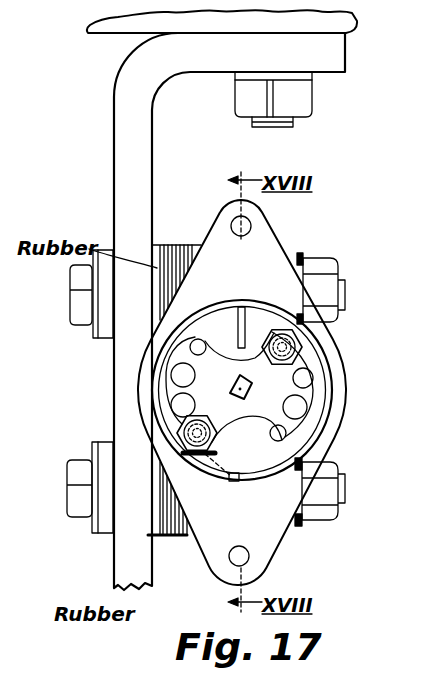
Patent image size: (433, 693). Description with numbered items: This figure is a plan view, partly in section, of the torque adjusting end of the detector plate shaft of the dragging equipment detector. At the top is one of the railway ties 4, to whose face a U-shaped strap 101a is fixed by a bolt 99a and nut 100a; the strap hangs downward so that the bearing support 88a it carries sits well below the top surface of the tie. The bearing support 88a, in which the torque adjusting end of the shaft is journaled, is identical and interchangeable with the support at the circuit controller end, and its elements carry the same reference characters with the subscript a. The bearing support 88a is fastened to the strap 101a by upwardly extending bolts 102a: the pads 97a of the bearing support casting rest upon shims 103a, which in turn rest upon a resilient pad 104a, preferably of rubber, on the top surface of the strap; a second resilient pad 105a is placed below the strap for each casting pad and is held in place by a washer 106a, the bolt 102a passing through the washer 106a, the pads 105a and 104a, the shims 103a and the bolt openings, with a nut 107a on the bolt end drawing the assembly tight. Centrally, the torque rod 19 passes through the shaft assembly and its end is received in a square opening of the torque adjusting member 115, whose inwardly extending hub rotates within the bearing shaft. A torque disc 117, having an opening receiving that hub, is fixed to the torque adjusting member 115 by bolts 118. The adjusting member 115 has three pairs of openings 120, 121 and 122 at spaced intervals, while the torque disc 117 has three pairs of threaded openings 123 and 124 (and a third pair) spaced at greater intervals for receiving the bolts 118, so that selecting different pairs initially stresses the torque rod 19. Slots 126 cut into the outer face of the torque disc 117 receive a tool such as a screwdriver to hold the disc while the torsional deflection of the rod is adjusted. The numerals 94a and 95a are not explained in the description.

The railway tie 4 is at (354, 22).
The U-shaped strap 101a is at (115, 136).
The nut 100a is at (309, 101).
The bolt 99a is at (263, 128).
The bearing support 88a is at (221, 192).
The mounting plate 94a is at (289, 242).
The mounting holes 95a is at (250, 228).
The pad of the bearing support casting 97a is at (190, 231).
The shim 103a is at (157, 246).
The resilient pad 104a is at (153, 262).
The second resilient pad 105a is at (168, 338).
The bolt 102a is at (78, 318).
The washer 106a is at (97, 337).
The nut 107a is at (336, 262).
The torque disc 117 is at (340, 493).
The torque adjusting member 115 is at (248, 420).
The torque rod 19 is at (238, 378).
The bolt 118 is at (302, 348).
The pair of openings 122 is at (284, 329).
The slot 126 is at (240, 323).
The pair of threaded openings 123 is at (198, 339).
The pair of openings 120 is at (176, 368).
The pair of threaded openings 124 is at (176, 405).
The pair of openings 121 is at (305, 378).